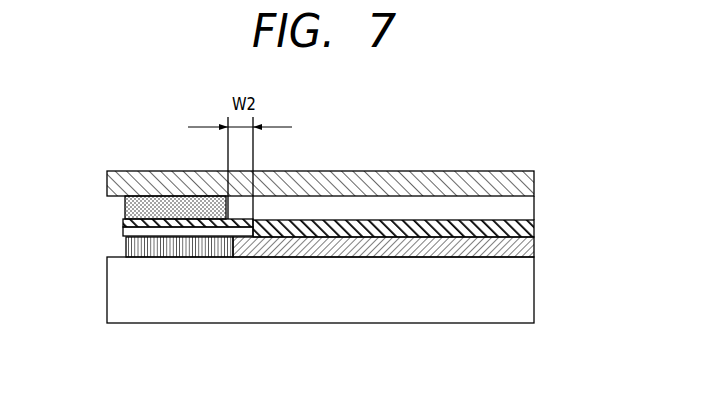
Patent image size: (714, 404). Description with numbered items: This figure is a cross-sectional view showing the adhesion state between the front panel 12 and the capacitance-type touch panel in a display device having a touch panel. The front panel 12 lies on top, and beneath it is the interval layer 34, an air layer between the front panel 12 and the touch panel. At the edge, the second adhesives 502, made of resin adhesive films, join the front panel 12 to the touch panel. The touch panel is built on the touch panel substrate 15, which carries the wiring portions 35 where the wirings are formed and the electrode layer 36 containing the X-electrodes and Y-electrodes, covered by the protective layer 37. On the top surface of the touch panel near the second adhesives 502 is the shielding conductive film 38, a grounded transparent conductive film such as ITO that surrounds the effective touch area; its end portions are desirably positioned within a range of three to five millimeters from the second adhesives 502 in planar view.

The front panel 12 is at (534, 183).
The touch panel substrate 15 is at (524, 293).
The interval layer 34 is at (378, 207).
The wiring portions 35 is at (168, 258).
The electrode layer 36 is at (325, 258).
The protective layer 37 is at (534, 230).
The shielding conductive film 38 is at (123, 232).
The second adhesives 502 is at (125, 205).